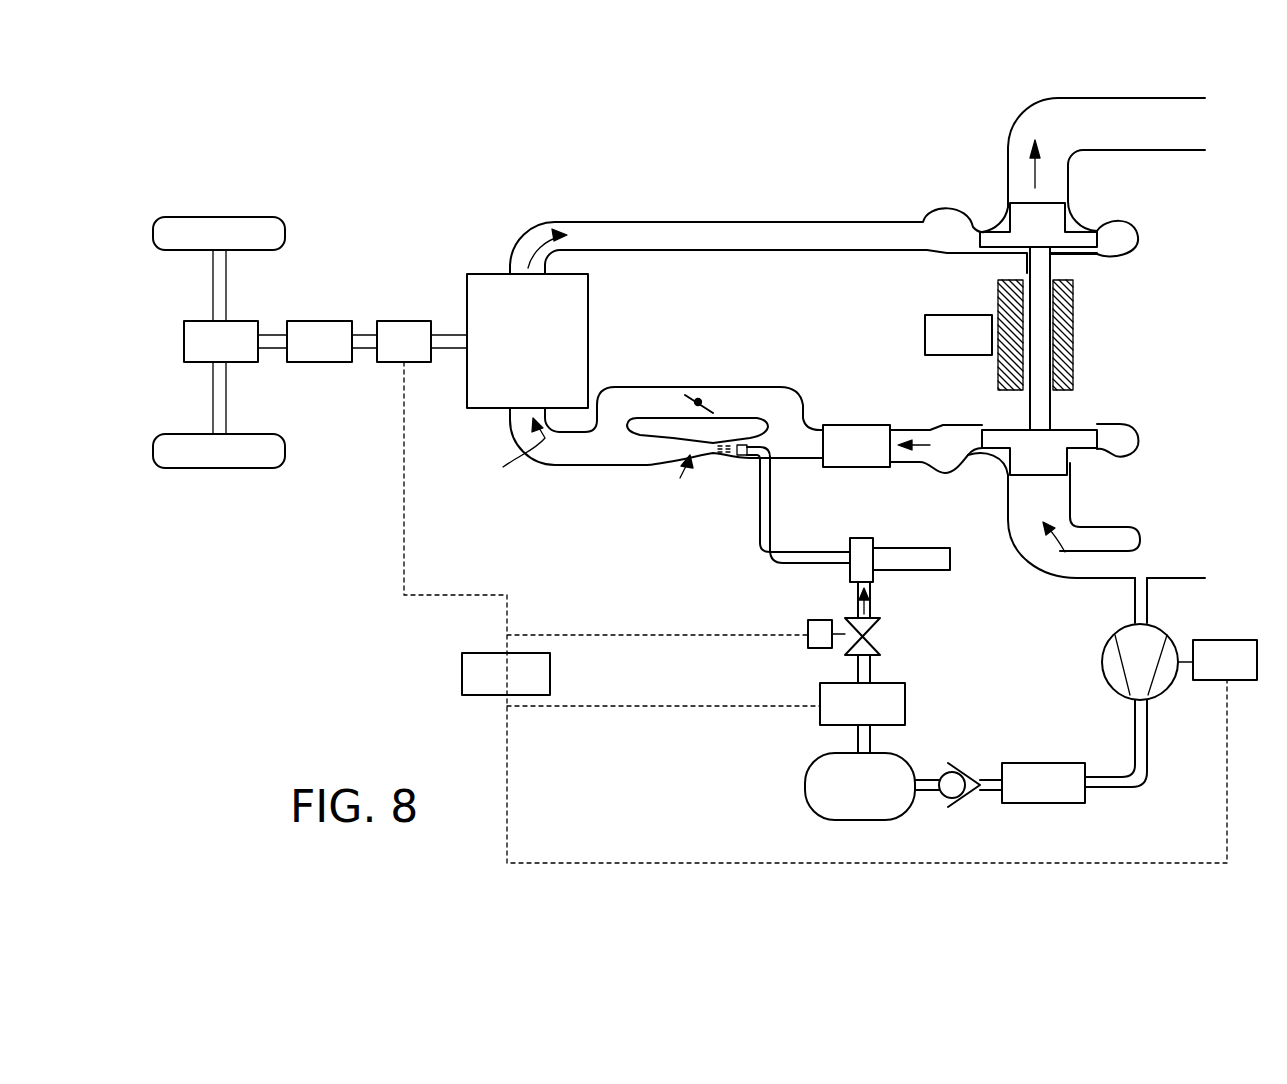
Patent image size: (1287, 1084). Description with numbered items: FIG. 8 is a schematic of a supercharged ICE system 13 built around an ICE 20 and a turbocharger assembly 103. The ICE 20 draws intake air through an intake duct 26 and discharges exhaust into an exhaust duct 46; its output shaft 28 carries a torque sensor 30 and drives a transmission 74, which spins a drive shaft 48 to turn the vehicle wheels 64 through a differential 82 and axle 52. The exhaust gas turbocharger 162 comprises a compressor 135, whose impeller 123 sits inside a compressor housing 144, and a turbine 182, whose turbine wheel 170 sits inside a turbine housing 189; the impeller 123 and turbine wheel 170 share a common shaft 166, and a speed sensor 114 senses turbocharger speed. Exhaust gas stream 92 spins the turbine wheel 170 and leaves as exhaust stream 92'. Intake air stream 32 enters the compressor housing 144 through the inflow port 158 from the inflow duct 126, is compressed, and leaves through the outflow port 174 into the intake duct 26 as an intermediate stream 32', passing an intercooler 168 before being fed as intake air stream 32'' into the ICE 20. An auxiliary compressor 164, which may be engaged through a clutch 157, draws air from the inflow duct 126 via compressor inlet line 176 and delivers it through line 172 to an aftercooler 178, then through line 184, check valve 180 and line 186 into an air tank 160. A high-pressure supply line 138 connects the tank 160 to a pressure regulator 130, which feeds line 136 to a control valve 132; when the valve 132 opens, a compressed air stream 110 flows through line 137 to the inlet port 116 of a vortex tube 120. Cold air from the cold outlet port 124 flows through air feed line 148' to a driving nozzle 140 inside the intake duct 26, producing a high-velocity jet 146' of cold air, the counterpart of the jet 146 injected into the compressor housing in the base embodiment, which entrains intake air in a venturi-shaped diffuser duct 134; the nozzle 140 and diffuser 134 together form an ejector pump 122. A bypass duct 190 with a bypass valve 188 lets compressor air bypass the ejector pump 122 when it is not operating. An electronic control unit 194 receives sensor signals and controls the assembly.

The supercharged ICE system 13 is at (340, 605).
The ICE 20 is at (527, 341).
The intake duct 26 is at (541, 466).
The output shaft 28 is at (449, 332).
The torque sensor 30 is at (404, 341).
The intake air stream 32 is at (1141, 522).
The intake port passage 32' is at (922, 427).
The intake air stream 32'' is at (506, 451).
The exhaust duct 46 is at (570, 222).
The drive shaft 48 is at (267, 351).
The axle 52 is at (226, 277).
The vehicle wheels 64 is at (200, 252).
The transmission 74 is at (332, 341).
The differential 82 is at (221, 341).
The exhaust gas stream 92 is at (527, 222).
The exhaust gas stream 92' is at (1068, 152).
The turbocharger assembly 103 is at (398, 690).
The stream 110 is at (878, 608).
The speed sensor 114 is at (958, 335).
The inlet port 116 is at (857, 588).
The vortex tube 120 is at (953, 580).
The ejector pump 122 is at (680, 478).
The impeller 123 is at (1098, 440).
The cold outlet port 124 is at (855, 545).
The inflow duct 126 is at (1197, 578).
The pressure regulator 130 is at (862, 704).
The control valve 132 is at (882, 640).
The diffuser duct 134 is at (663, 465).
The compressor 135 is at (1133, 422).
The interconnecting line 136 is at (850, 660).
The interconnecting line 137 is at (870, 607).
The high-pressure air supply line 138 is at (855, 742).
The driving nozzle 140 is at (745, 444).
The compressor housing 144 is at (1090, 430).
The jet 146 is at (941, 380).
The high velocity jet 146' is at (757, 382).
The air feed line 148' is at (765, 505).
The clutch 157 is at (1225, 660).
The inflow port 158 is at (1047, 490).
The air tank 160 is at (860, 786).
The exhaust gas turbocharger 162 is at (1095, 329).
The auxiliary compressor 164 is at (1102, 658).
The common shaft 166 is at (1023, 277).
The intercooler 168 is at (876, 446).
The turbine wheel 170 is at (1025, 203).
The interconnecting line 172 is at (1133, 713).
The outflow port 174 is at (935, 452).
The compressor inlet line 176 is at (1147, 595).
The aftercooler 178 is at (1043, 783).
The check valve 180 is at (965, 795).
The turbine 182 is at (1140, 220).
The interconnecting line 184 is at (988, 778).
The interconnecting line 186 is at (925, 780).
The bypass valve 188 is at (693, 394).
The exhaust port 189 is at (1100, 257).
The bypass duct 190 is at (670, 387).
The electronic control unit 194 is at (815, 612).